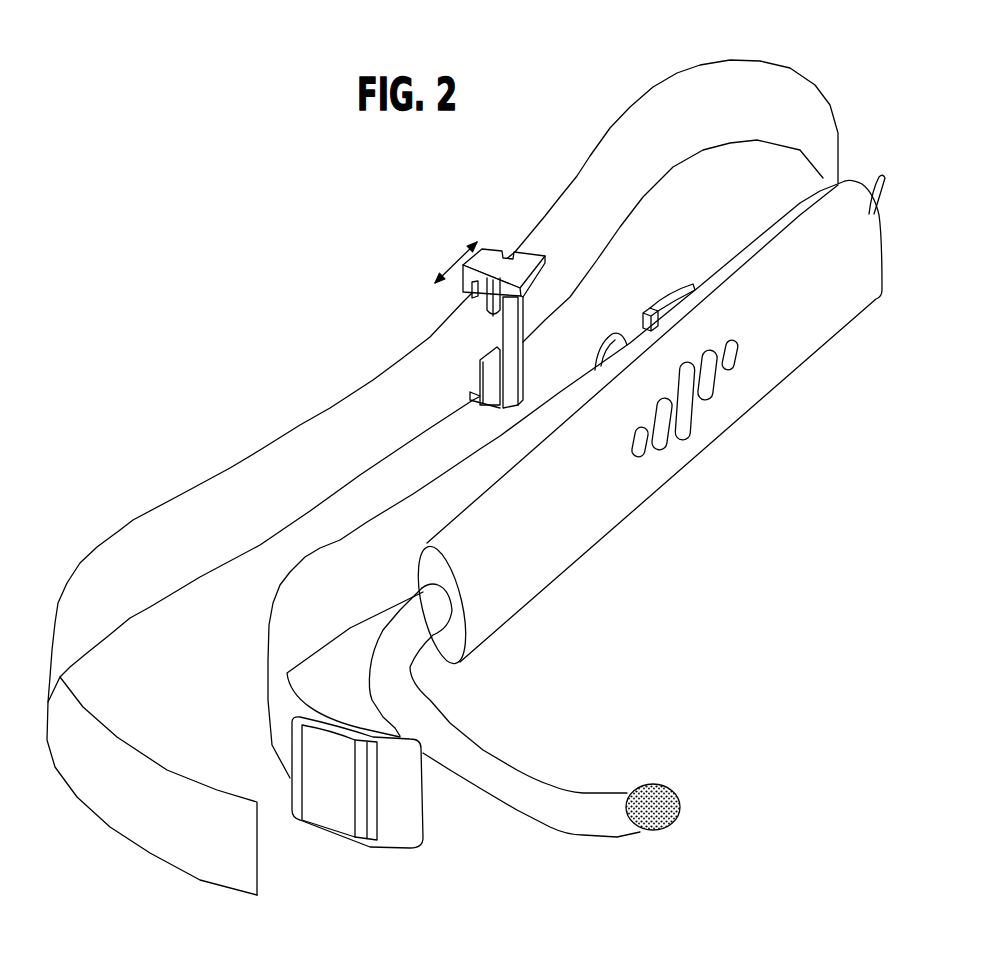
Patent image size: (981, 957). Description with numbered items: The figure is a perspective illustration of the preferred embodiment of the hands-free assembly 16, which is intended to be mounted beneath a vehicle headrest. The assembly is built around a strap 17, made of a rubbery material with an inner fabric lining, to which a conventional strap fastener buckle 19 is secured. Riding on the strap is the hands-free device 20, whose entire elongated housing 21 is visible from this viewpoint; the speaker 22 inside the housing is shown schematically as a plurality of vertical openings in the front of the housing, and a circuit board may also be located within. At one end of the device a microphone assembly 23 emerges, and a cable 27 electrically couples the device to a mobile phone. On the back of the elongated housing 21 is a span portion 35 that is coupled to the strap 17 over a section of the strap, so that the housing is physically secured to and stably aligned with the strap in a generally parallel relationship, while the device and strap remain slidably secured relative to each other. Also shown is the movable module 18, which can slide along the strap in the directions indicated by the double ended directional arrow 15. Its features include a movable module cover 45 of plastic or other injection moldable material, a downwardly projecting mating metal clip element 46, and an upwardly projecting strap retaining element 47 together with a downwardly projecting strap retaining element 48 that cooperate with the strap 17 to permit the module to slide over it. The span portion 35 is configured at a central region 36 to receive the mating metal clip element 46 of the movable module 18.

The double ended directional arrow 15 is at (458, 260).
The hands-free assembly 16 is at (310, 270).
The strap 17 is at (231, 465).
The movable module 18 is at (502, 249).
The strap fastener buckle 19 is at (412, 850).
The hands-free device 20 is at (630, 527).
The elongated housing 21 is at (641, 487).
The speaker 22 is at (692, 418).
The microphone assembly 23 is at (525, 757).
The cable 27 is at (869, 180).
The span portion 35 is at (659, 280).
The central region 36 is at (632, 318).
The movable module cover 45 is at (476, 296).
The mating metal clip element 46 is at (518, 378).
The upwardly projecting strap retaining element 47 is at (494, 410).
The downwardly projecting strap retaining element 48 is at (486, 310).